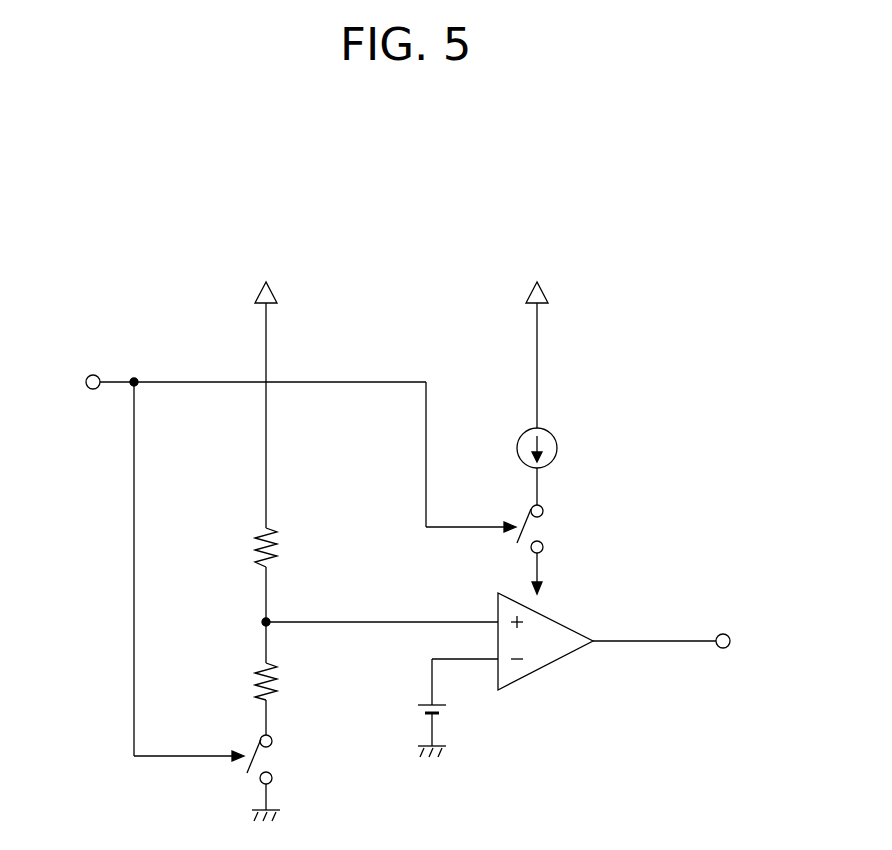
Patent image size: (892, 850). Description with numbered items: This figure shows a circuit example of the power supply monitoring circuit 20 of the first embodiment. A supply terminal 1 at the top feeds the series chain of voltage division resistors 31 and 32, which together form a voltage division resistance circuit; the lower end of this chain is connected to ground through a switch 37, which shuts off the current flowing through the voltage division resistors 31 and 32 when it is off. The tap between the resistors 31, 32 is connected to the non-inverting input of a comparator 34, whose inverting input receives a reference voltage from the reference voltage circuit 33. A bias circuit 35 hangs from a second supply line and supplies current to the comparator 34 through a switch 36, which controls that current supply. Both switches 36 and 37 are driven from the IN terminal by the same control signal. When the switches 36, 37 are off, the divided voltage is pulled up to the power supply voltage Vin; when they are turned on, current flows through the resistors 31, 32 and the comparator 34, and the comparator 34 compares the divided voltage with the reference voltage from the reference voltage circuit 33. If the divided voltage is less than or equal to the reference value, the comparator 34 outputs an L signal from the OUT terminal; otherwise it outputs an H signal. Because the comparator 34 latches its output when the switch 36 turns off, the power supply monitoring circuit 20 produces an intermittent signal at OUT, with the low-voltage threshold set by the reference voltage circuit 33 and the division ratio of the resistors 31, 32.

The power supply terminal 1 is at (272, 282).
The power supply monitoring circuit 20 is at (731, 251).
The voltage division resistor 31 is at (250, 557).
The voltage division resistor 32 is at (248, 683).
The reference voltage circuit 33 is at (443, 712).
The comparator 34 is at (560, 660).
The bias circuit 35 is at (517, 450).
The switch 36 is at (546, 525).
The switch 37 is at (277, 753).